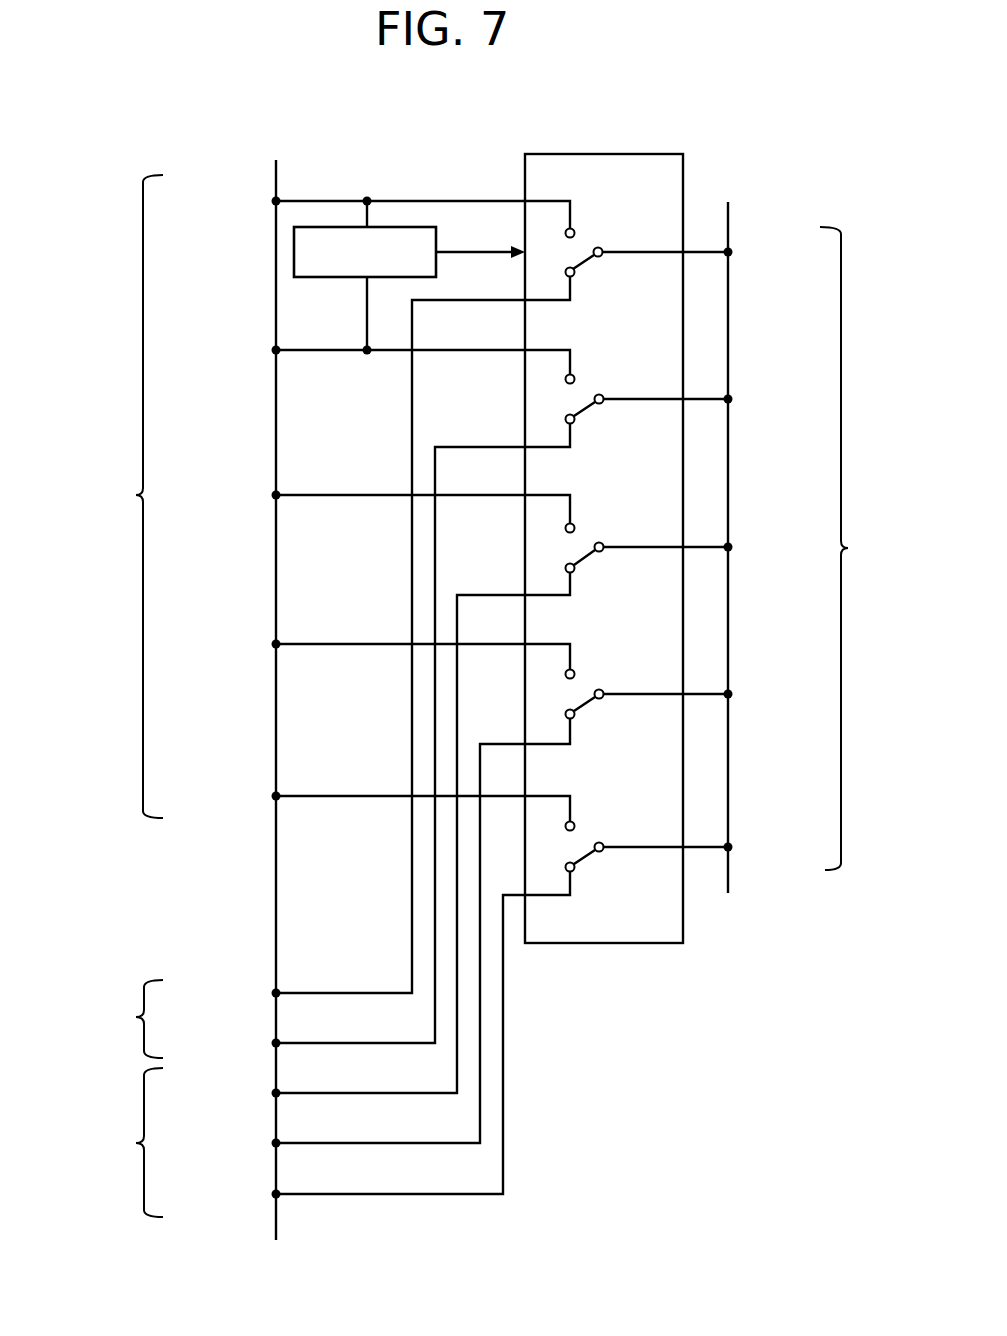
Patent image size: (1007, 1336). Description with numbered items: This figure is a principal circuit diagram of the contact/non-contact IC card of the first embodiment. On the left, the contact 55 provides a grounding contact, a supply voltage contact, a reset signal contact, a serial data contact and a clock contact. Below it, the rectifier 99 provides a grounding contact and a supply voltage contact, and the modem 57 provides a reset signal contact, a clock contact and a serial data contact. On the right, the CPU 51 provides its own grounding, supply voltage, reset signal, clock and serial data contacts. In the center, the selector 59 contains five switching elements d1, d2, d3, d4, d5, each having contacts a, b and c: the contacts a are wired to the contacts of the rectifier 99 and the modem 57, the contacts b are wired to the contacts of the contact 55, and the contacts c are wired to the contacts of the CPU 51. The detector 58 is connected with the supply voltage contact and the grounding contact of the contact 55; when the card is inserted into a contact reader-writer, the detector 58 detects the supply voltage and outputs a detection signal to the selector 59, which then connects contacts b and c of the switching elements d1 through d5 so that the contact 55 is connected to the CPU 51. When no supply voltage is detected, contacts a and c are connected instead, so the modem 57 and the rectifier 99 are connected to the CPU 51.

The CPU 51 is at (894, 588).
The contact 55 is at (94, 538).
The modem 57 is at (94, 1184).
The detector 58 is at (398, 227).
The selector 59 is at (690, 165).
The rectifier 99 is at (91, 1056).
The switching element d1 is at (585, 240).
The switching element d2 is at (581, 390).
The switching element d3 is at (581, 537).
The switching element d4 is at (584, 683).
The switching element d5 is at (586, 833).